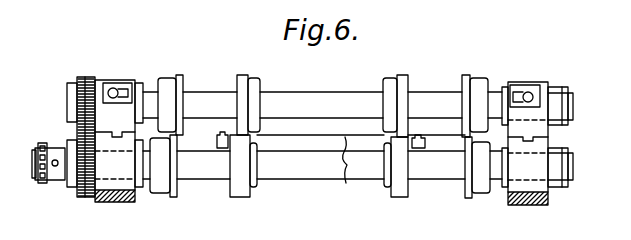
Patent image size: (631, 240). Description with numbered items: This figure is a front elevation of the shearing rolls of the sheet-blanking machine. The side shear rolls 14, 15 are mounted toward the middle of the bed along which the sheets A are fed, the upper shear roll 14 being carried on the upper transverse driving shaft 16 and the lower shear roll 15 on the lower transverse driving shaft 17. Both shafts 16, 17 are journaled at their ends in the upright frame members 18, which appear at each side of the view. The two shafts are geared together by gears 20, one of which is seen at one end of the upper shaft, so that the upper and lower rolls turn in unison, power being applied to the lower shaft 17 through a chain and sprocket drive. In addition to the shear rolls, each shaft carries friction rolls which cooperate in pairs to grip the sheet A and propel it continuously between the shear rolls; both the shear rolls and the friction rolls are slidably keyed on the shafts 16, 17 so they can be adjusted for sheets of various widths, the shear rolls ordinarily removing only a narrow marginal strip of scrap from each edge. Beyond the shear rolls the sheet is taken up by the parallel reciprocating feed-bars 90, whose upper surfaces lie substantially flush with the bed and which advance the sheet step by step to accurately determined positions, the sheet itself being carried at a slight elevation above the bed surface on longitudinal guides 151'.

The side shear roll 14 is at (173, 79).
The side shear roll 15 is at (462, 190).
The transverse driving shaft 16 is at (281, 100).
The transverse driving shaft 17 is at (288, 168).
The upright frame member 18 is at (105, 81).
The gear 20 is at (87, 64).
The feed-bar 90 is at (228, 147).
The longitudinal guide 151' is at (39, 191).
The sheet A is at (351, 173).